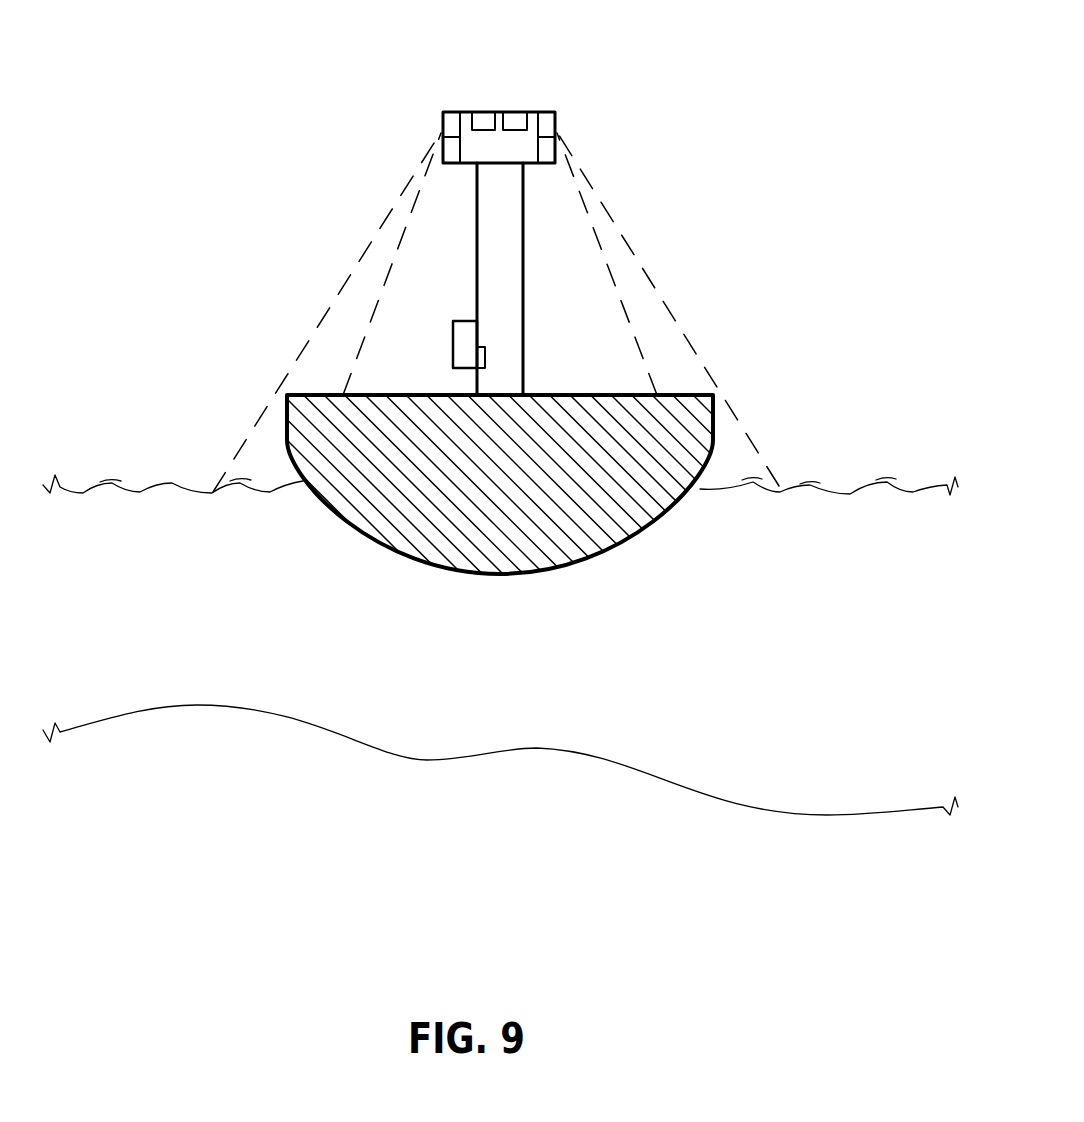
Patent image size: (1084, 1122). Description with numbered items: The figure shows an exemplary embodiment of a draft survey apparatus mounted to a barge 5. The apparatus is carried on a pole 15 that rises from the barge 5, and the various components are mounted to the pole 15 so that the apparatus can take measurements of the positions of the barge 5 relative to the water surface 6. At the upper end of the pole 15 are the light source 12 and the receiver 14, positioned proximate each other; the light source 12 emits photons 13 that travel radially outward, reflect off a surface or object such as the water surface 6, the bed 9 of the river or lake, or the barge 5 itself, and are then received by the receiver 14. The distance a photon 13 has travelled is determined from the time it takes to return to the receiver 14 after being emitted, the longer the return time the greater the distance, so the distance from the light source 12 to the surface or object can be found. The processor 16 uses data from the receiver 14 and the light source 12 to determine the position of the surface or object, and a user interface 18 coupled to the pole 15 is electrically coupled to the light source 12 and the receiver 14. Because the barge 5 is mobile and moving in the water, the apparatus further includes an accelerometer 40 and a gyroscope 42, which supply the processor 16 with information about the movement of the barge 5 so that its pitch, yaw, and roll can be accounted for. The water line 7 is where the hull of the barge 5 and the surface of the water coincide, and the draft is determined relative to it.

The barge 5 is at (459, 578).
The water surface 6 is at (111, 482).
The water line 7 is at (305, 500).
The bed 9 is at (420, 760).
The light source 12 is at (534, 279).
The photons 13 is at (672, 313).
The receiver 14 is at (514, 89).
The pole 15 is at (523, 357).
The processor 16 is at (485, 357).
The user interface 18 is at (453, 335).
The accelerometer 40 is at (480, 110).
The gyroscope 42 is at (515, 110).